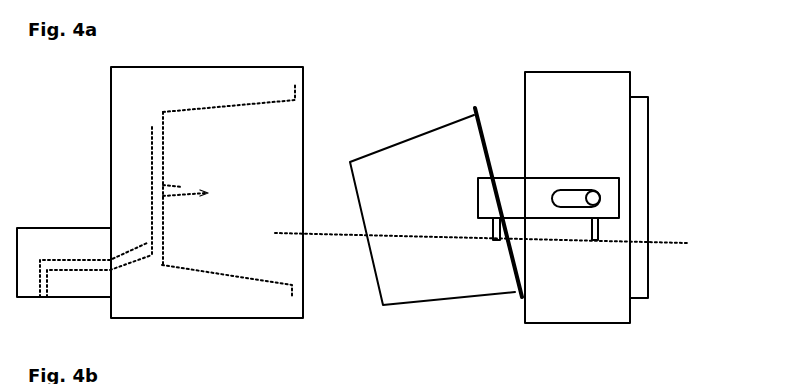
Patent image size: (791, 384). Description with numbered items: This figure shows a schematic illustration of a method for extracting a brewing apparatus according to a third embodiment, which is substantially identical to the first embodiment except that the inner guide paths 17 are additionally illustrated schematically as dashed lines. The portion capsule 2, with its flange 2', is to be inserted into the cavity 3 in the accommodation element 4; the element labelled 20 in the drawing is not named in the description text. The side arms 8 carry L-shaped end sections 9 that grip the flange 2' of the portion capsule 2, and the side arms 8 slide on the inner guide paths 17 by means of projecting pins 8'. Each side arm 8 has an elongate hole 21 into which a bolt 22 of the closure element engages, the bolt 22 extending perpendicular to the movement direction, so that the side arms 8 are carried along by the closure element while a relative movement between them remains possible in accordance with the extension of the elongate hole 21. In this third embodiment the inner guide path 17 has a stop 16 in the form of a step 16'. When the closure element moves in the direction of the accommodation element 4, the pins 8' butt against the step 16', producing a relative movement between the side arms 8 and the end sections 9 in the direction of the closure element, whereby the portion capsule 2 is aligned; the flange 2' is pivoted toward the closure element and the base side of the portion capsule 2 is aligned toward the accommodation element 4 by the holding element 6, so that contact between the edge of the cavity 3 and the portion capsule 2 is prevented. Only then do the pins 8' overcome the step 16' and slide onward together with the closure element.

The portion capsule 2 is at (432, 210).
The flange of the portion capsule 2' is at (543, 340).
The cavity 3 is at (258, 100).
The accommodation element 4 is at (210, 303).
The holding element 6 is at (613, 174).
The side arms 8 is at (603, 161).
The pins 8' is at (539, 293).
The L-shaped end sections 9 is at (482, 190).
The stop 16 is at (454, 308).
The step 16' is at (488, 363).
The inner guide paths 17 is at (675, 243).
The aperture / diaphragm 20 is at (180, 186).
The elongate hole 21 is at (570, 207).
The bolt 22 is at (603, 197).